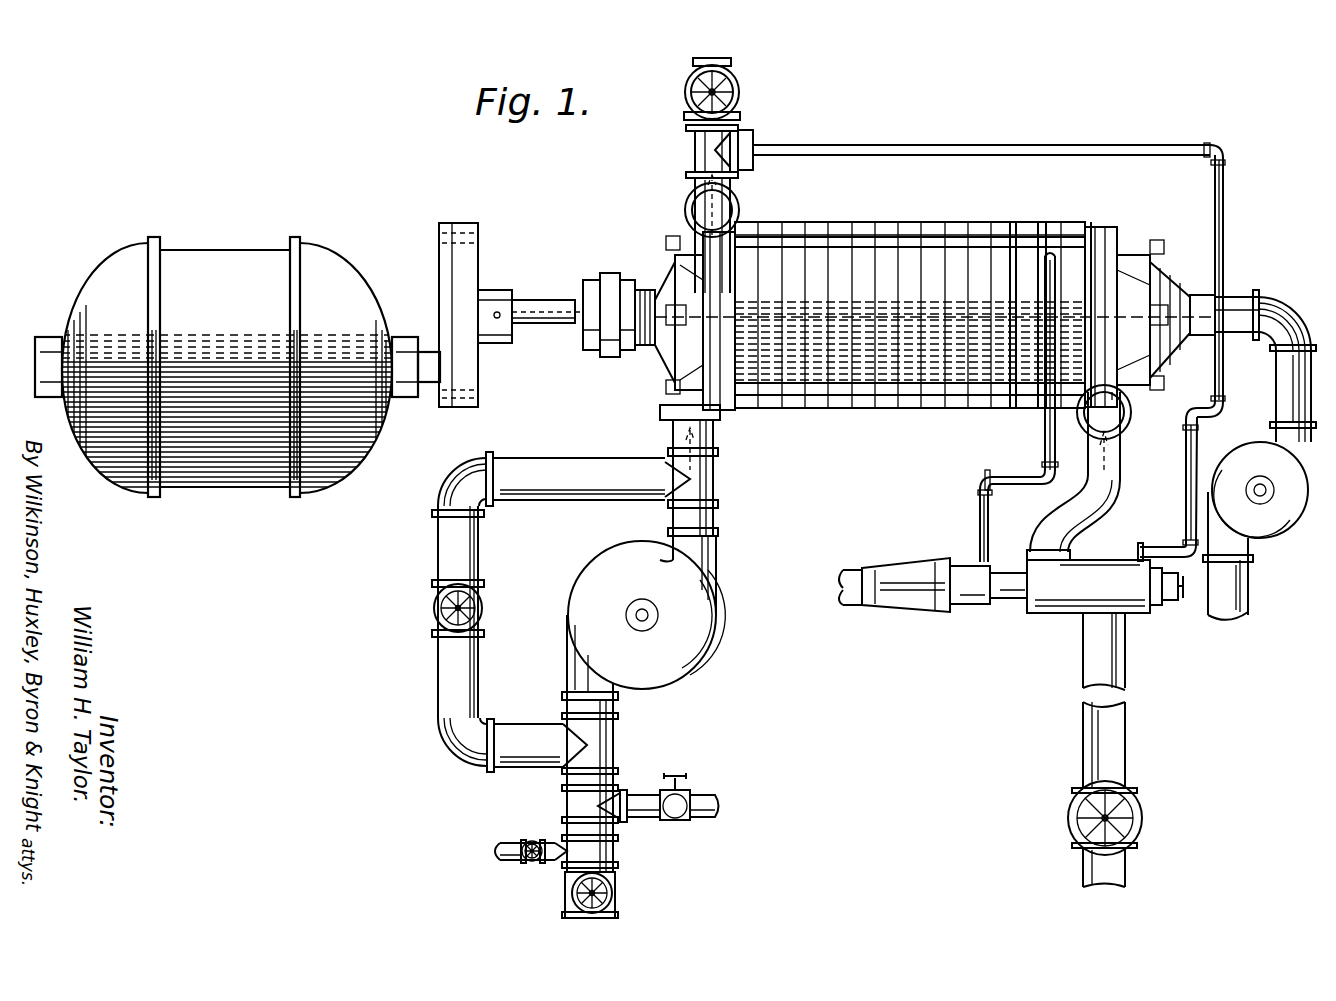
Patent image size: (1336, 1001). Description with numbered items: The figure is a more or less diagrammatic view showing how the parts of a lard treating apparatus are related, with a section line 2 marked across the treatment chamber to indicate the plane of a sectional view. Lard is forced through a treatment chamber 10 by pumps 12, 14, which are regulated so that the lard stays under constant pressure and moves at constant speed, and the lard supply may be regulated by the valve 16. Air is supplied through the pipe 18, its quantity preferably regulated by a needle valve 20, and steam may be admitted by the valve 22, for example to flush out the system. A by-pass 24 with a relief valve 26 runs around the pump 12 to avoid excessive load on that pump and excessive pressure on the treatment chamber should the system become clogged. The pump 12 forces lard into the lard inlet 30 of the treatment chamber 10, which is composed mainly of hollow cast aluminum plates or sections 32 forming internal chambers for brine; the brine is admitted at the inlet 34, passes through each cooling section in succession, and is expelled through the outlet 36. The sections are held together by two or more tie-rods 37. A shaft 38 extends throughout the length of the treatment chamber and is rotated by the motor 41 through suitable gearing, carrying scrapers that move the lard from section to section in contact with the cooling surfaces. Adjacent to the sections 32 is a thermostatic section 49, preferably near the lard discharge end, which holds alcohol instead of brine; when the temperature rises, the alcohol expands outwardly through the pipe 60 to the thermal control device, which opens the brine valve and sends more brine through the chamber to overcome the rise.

The section line 2 is at (569, 294).
The treatment chamber 10 is at (912, 232).
The pump 12 is at (692, 662).
The pump 14 is at (1281, 532).
The valve 16 is at (614, 890).
The pipe 18 is at (705, 795).
The needle valve 20 is at (677, 775).
The valve 22 is at (531, 862).
The by-pass 24 is at (479, 547).
The relief valve 26 is at (483, 611).
The lard inlet 30 is at (720, 424).
The plates or sections 32 is at (1012, 225).
The inlet 34 is at (1130, 420).
The outlet 36 is at (738, 212).
The tie-rods 37 is at (814, 237).
The shaft 38 is at (537, 308).
The motor 41 is at (358, 485).
The thermostatic section 49 is at (1048, 225).
The pipe 60 is at (1044, 432).